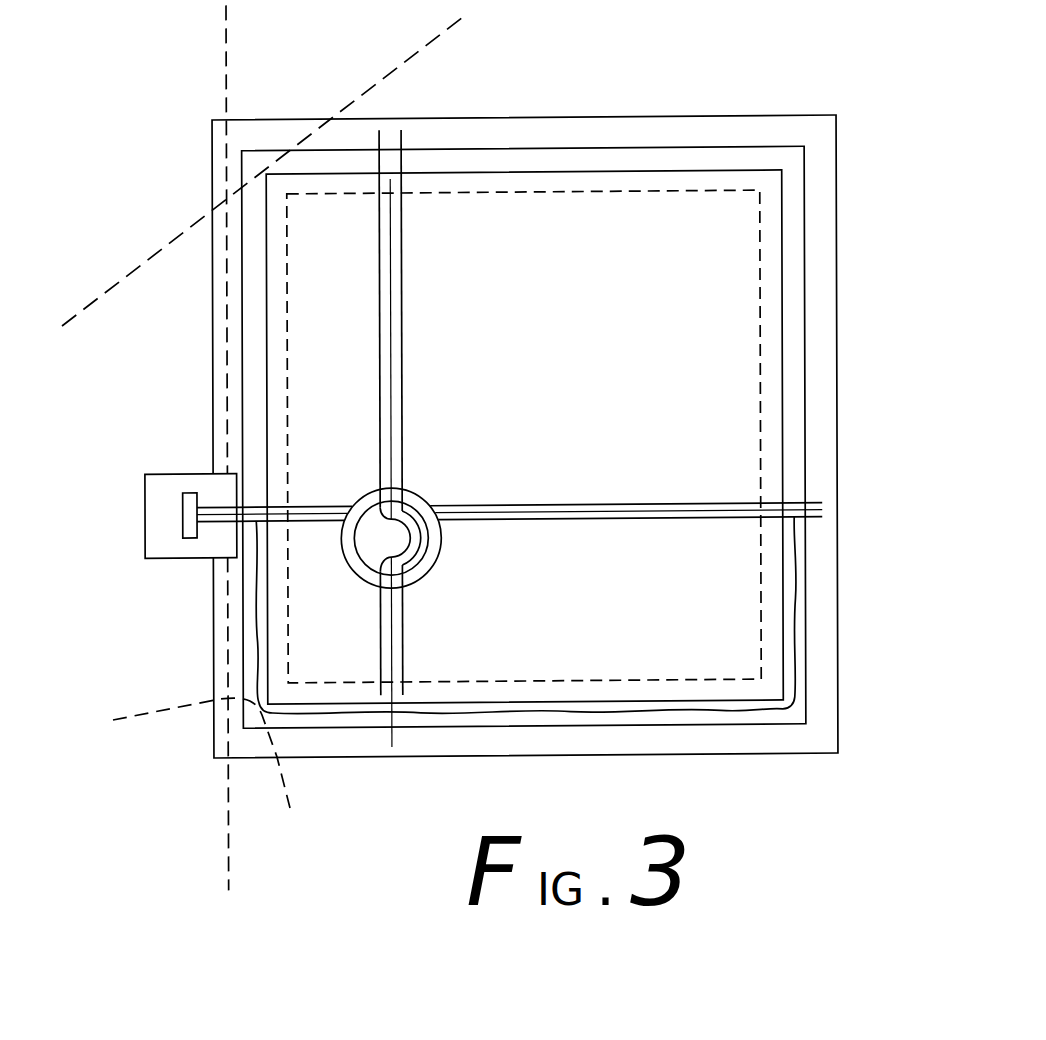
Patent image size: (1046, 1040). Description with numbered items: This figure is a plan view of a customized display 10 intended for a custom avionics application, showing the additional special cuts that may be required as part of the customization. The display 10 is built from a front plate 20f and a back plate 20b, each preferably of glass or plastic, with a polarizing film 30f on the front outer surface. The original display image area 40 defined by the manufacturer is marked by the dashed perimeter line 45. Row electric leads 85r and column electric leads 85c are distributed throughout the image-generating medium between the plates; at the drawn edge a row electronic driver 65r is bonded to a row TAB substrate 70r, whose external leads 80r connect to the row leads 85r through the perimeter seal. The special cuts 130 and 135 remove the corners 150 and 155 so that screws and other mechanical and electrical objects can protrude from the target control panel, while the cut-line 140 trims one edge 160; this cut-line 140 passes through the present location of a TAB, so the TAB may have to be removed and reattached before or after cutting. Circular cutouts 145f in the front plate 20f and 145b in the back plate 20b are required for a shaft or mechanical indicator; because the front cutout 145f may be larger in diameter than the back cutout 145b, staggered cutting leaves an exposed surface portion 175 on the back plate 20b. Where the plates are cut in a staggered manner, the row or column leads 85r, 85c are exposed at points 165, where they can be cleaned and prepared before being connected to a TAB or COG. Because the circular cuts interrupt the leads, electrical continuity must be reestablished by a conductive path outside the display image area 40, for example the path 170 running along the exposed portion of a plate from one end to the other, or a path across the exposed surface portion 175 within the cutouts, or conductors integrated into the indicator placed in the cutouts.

The display 10 is at (765, 92).
The back plate 20b is at (820, 133).
The front plate 20f is at (792, 174).
The polarizing film 30f is at (768, 223).
The display image area 40 is at (722, 433).
The dashed perimeter line 45 is at (762, 370).
The column electric lead 85c is at (402, 250).
The row electric lead 85r is at (608, 505).
The circular cutout 145b is at (420, 497).
The circular cutout 145f is at (417, 572).
The exposed surface portion 175 is at (422, 573).
The points of exposed leads 165 is at (813, 502).
The conductive path 170 is at (782, 717).
The corner 150 is at (265, 137).
The corner 155 is at (252, 743).
The edge 160 is at (213, 758).
The special cut 130 is at (385, 80).
The special cut 135 is at (155, 710).
The cut-line 140 is at (225, 67).
The row electronic driver 65r is at (186, 502).
The row TAB substrate 70r is at (158, 530).
The external leads 80r is at (207, 525).